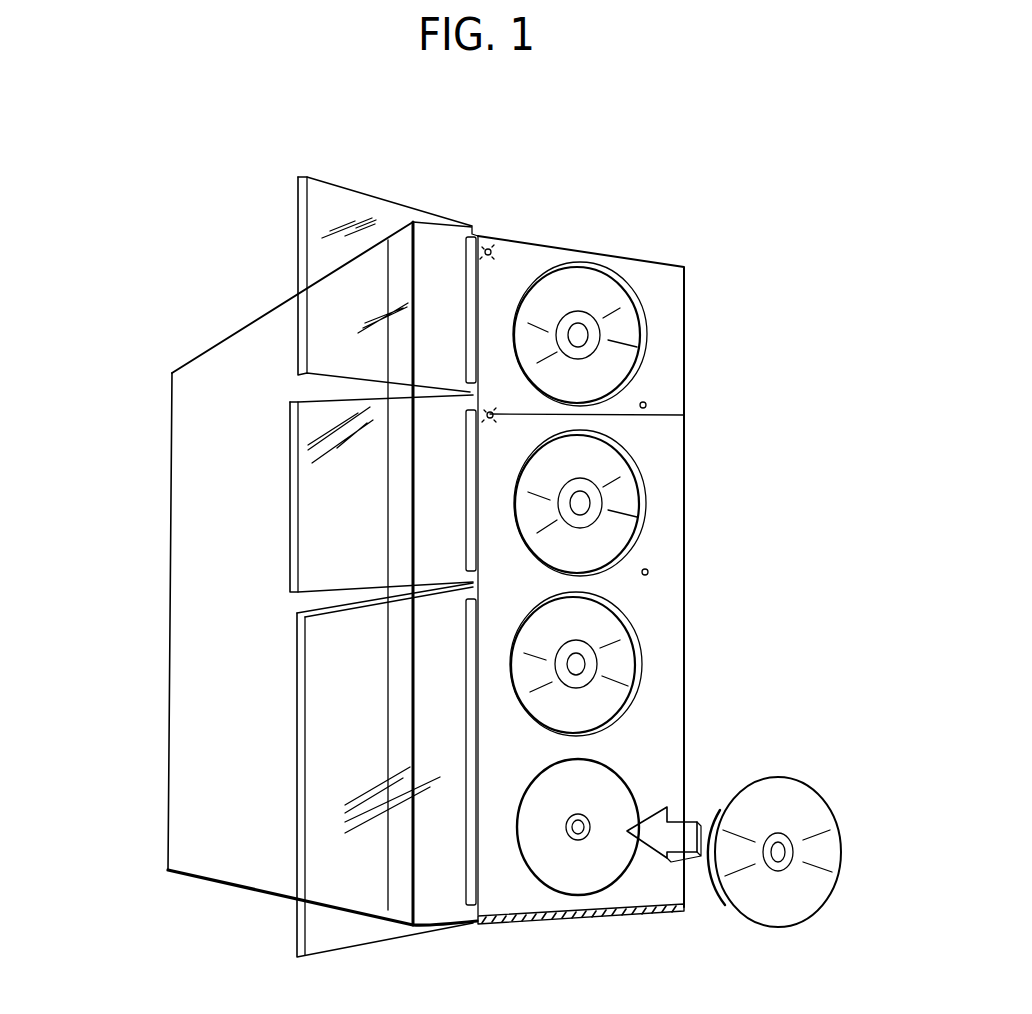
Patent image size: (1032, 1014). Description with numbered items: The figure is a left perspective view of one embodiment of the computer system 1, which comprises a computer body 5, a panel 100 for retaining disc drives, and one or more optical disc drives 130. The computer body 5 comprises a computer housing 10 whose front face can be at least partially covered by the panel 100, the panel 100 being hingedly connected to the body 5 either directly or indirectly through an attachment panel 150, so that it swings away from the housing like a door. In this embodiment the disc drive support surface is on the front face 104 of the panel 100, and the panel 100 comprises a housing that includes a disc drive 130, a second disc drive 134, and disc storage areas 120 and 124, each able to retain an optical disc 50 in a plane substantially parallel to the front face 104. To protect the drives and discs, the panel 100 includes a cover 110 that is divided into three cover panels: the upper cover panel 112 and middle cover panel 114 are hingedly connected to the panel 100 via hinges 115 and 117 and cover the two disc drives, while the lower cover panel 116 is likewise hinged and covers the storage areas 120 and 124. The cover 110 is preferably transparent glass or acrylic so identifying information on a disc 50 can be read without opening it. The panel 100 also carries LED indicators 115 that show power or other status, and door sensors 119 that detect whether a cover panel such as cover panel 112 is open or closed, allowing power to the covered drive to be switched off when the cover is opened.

The computer system 1 is at (115, 605).
The computer body 5 is at (168, 487).
The computer housing 10 is at (172, 397).
The optical disc 50 is at (572, 293).
The panel 100 is at (687, 323).
The front face of the panel 104 is at (667, 517).
The cover 110 is at (290, 926).
The upper cover panel 112 is at (315, 215).
The middle cover panel 114 is at (317, 508).
The hinge / LED indicator 115 is at (476, 278).
The lower cover panel 116 is at (317, 717).
The hinge 117 is at (472, 487).
The door sensor 119 is at (489, 249).
The disc storage area 120 is at (637, 635).
The disc storage area 124 is at (570, 865).
The optical disc drive 130 is at (627, 285).
The optical disc drive 134 is at (640, 472).
The attachment panel 150 is at (471, 394).